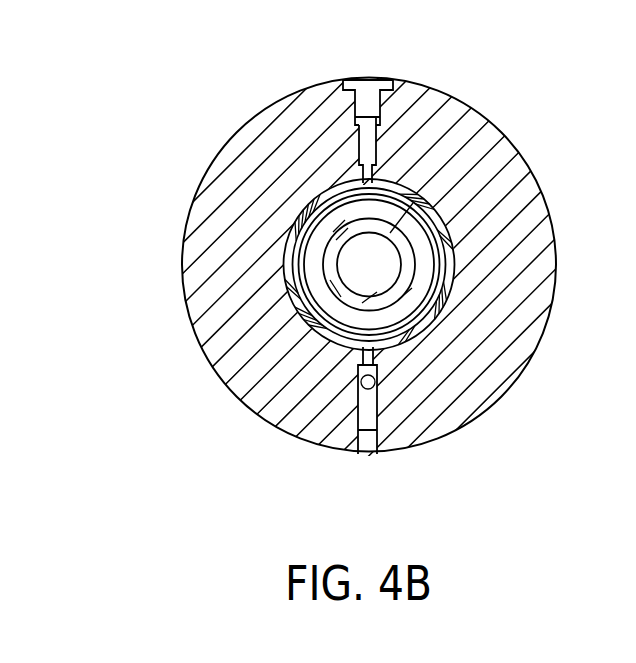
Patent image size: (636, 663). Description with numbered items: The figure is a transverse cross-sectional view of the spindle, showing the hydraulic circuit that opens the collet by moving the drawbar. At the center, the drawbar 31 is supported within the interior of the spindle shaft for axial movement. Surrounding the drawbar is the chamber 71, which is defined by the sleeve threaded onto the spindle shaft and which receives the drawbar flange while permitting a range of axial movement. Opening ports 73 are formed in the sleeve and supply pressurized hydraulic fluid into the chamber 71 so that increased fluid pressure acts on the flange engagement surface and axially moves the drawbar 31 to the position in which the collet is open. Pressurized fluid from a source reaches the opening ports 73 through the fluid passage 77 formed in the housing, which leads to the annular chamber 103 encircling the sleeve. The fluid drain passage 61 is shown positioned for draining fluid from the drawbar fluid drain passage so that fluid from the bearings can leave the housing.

The drawbar 31 is at (415, 196).
The fluid drain passage 61 is at (360, 403).
The chamber 71 is at (407, 303).
The opening ports 73 is at (366, 198).
The fluid passage 77 is at (368, 103).
The annular chamber 103 is at (450, 263).